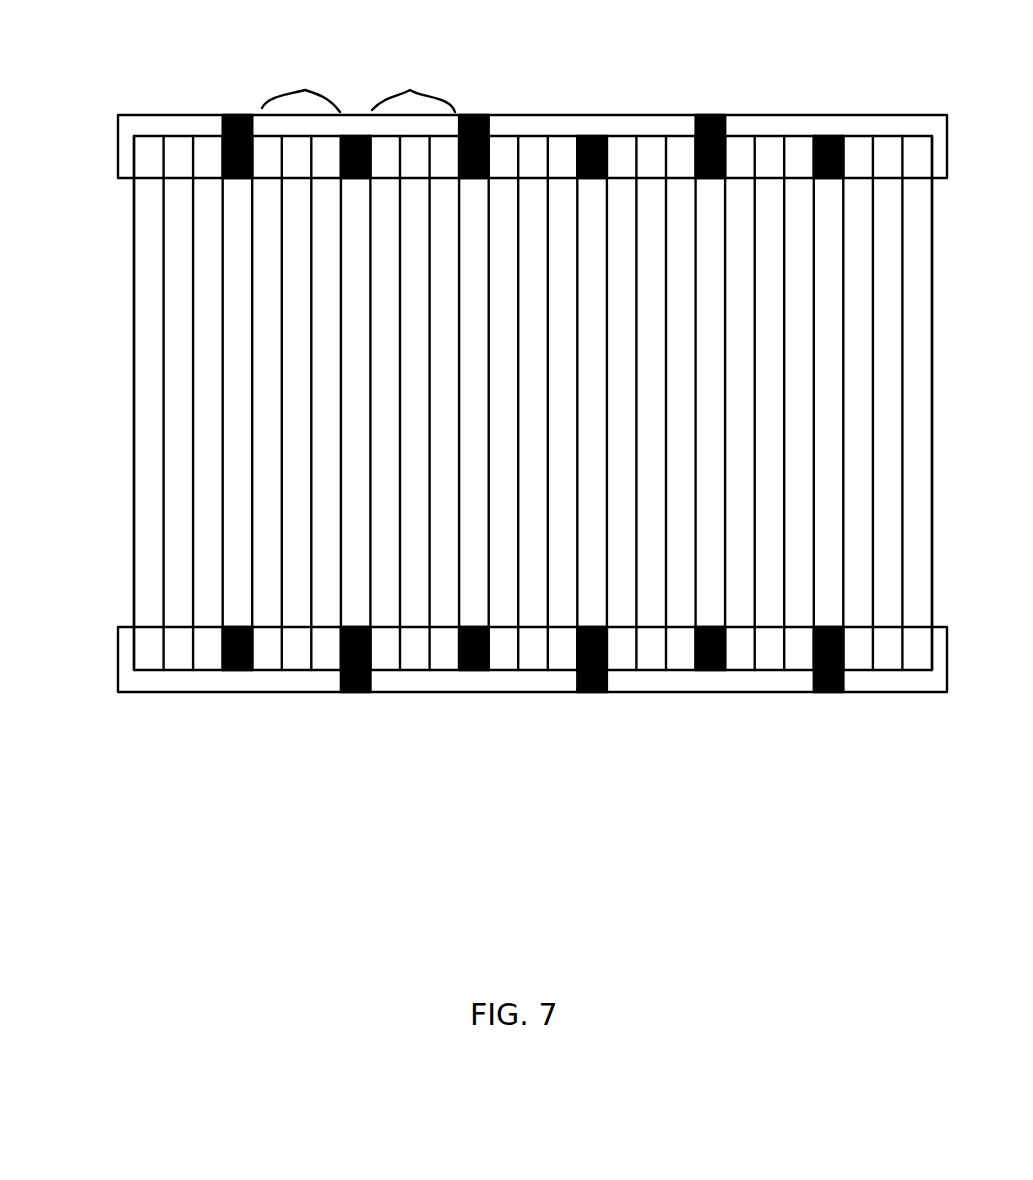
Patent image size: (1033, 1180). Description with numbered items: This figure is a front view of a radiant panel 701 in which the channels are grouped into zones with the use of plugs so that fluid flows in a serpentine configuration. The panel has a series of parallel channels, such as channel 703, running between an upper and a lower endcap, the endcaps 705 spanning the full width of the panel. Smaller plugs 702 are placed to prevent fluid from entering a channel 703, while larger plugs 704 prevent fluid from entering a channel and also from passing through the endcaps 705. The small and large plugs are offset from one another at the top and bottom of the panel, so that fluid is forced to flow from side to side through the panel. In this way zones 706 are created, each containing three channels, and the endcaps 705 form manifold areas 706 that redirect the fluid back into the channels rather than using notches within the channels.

The radiant panel 701 is at (135, 207).
The smaller plugs 702 is at (235, 693).
The channel 703 is at (145, 365).
The larger plugs 704 is at (233, 113).
The endcaps 705 is at (180, 113).
The zones 706 is at (410, 82).